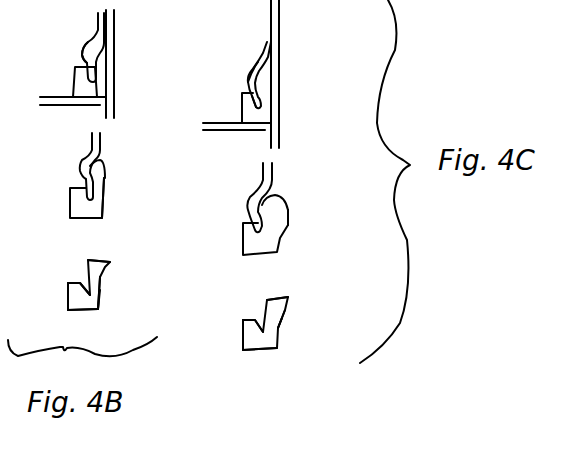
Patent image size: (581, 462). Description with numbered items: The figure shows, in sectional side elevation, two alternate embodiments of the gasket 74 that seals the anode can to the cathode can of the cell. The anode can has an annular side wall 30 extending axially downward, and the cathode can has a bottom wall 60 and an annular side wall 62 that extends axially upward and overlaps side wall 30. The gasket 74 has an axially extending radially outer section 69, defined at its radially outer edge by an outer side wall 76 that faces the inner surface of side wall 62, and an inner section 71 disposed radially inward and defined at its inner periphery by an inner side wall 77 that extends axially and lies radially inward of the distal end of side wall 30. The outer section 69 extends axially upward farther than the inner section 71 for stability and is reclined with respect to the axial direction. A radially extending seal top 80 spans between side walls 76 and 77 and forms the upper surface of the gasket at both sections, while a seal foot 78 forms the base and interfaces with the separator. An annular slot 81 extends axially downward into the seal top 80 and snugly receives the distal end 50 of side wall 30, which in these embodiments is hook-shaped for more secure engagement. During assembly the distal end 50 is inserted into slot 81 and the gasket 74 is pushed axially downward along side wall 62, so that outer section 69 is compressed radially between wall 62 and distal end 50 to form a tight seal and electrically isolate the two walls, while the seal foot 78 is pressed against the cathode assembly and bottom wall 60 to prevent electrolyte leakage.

In FIG. 4B, the annular side wall 30 is at (95, 18).
In FIG. 4C, the annular side wall 30 is at (255, 47).
In FIG. 4B, the distal end 50 is at (83, 61).
In FIG. 4C, the distal end 50 is at (250, 88).
In FIG. 4B, the bottom wall 60 is at (80, 107).
In FIG. 4C, the bottom wall 60 is at (233, 132).
In FIG. 4B, the annular side wall 62 is at (115, 63).
In FIG. 4C, the annular side wall 62 is at (281, 43).
In FIG. 4B, the radially outer section 69 is at (110, 192).
In FIG. 4C, the radially outer section 69 is at (291, 222).
In FIG. 4B, the inner section 71 is at (66, 210).
In FIG. 4C, the inner section 71 is at (238, 234).
In FIG. 4B, the gasket 74 is at (70, 80).
In FIG. 4C, the gasket 74 is at (238, 103).
In FIG. 4B, the outer side wall 76 is at (116, 80).
In FIG. 4C, the outer side wall 76 is at (281, 87).
In FIG. 4B, the inner side wall 77 is at (66, 301).
In FIG. 4C, the inner side wall 77 is at (243, 337).
In FIG. 4B, the seal foot 78 is at (83, 312).
In FIG. 4C, the seal foot 78 is at (265, 350).
In FIG. 4B, the seal top 80 is at (95, 260).
In FIG. 4C, the seal top 80 is at (277, 297).
In FIG. 4B, the annular slot 81 is at (115, 56).
In FIG. 4C, the annular slot 81 is at (262, 95).